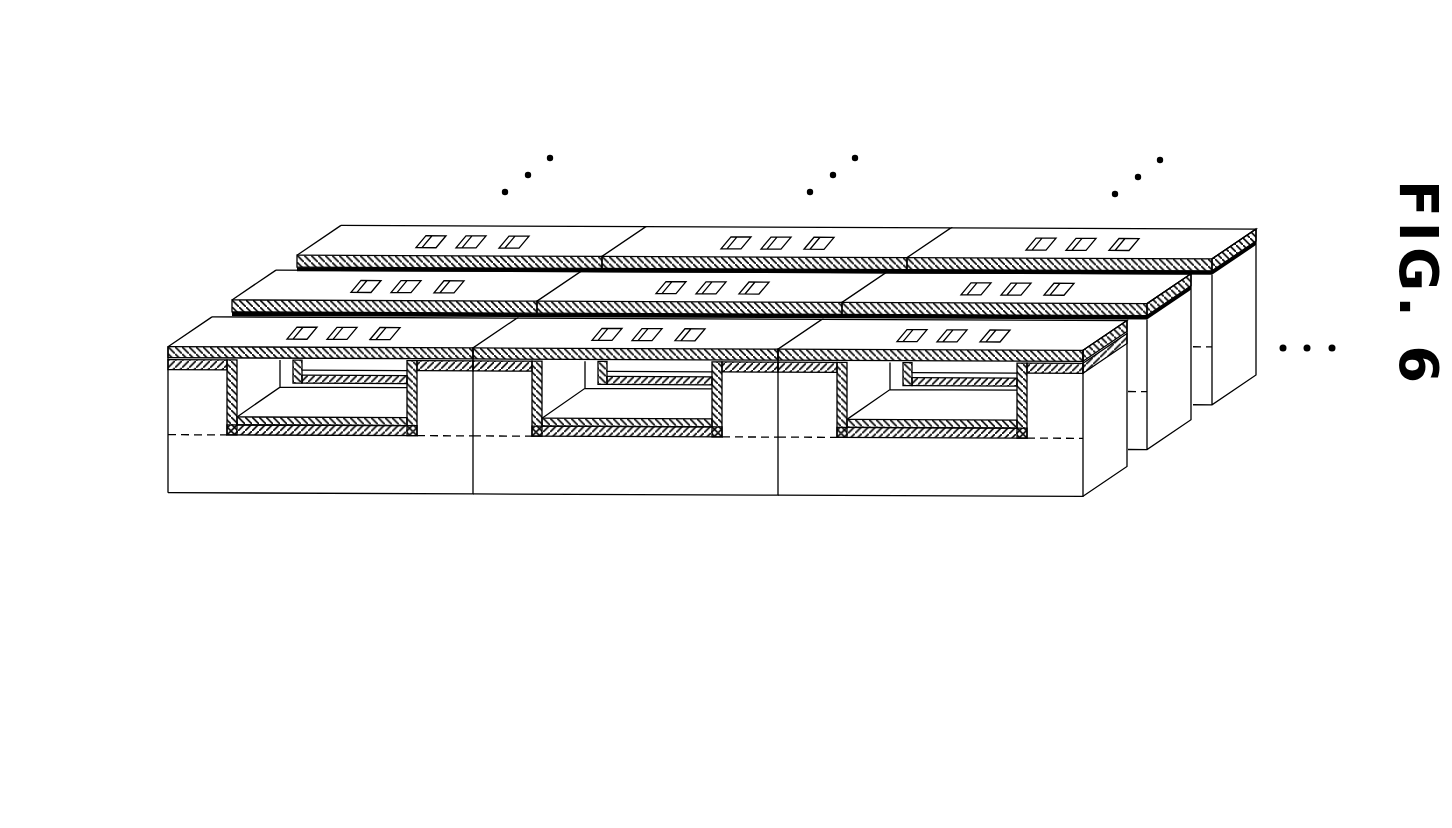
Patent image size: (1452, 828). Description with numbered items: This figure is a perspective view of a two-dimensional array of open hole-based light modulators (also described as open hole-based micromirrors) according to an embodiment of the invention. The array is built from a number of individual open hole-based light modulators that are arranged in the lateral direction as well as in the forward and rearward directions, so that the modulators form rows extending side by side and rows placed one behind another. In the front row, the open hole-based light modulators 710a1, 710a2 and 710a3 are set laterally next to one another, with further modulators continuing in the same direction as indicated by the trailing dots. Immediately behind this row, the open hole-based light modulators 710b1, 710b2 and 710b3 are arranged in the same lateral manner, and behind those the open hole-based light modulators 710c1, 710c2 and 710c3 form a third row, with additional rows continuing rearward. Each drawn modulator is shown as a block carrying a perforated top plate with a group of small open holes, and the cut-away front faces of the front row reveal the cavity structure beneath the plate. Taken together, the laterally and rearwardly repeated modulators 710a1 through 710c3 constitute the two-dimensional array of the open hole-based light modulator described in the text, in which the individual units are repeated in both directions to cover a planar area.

The open hole-based light modulator 710a1 is at (187, 333).
The open hole-based light modulator 710a2 is at (637, 322).
The open hole-based light modulator 710a3 is at (942, 327).
The open hole-based light modulator 710b1 is at (252, 287).
The open hole-based light modulator 710b2 is at (700, 280).
The open hole-based light modulator 710b3 is at (1007, 280).
The open hole-based light modulator 710c1 is at (317, 240).
The open hole-based light modulator 710c2 is at (765, 227).
The open hole-based light modulator 710c3 is at (1073, 233).